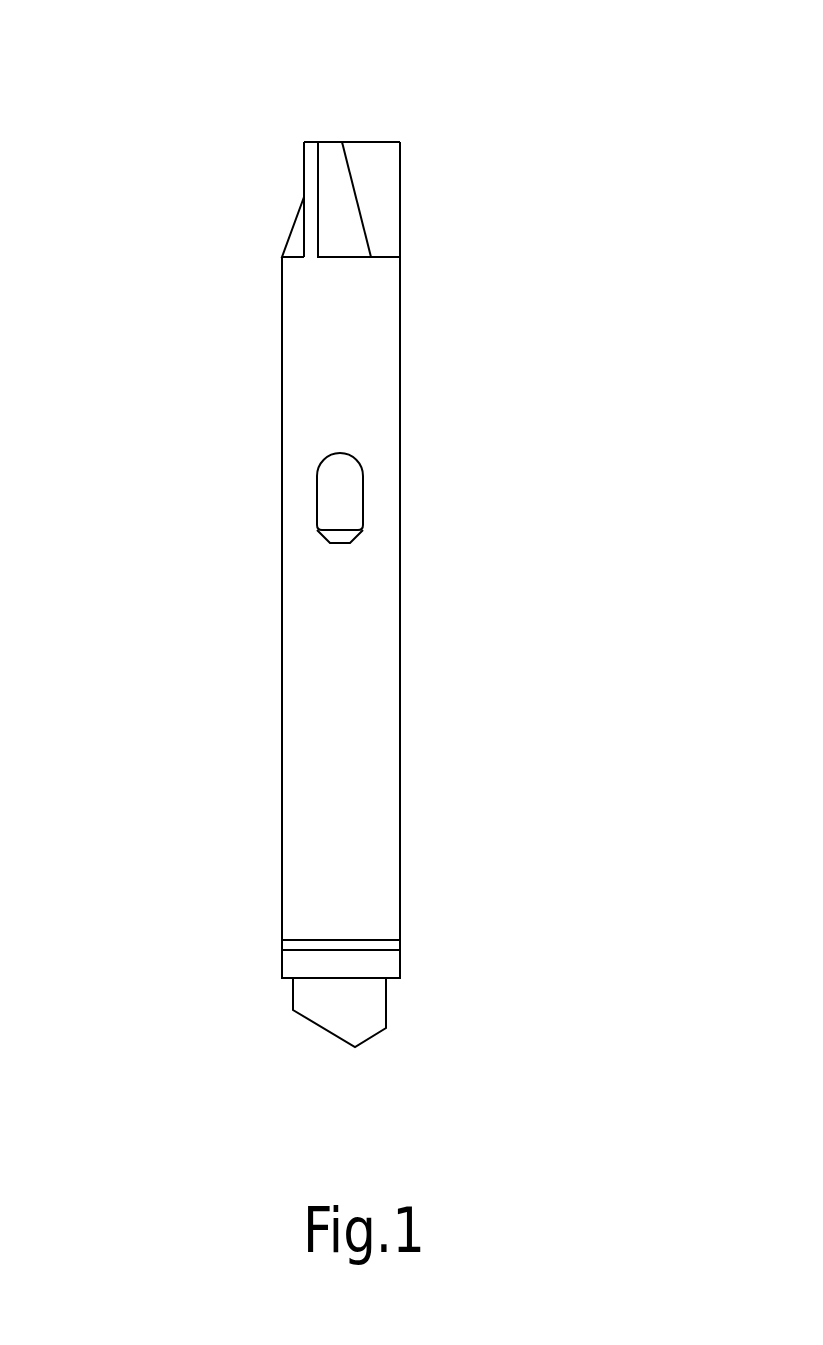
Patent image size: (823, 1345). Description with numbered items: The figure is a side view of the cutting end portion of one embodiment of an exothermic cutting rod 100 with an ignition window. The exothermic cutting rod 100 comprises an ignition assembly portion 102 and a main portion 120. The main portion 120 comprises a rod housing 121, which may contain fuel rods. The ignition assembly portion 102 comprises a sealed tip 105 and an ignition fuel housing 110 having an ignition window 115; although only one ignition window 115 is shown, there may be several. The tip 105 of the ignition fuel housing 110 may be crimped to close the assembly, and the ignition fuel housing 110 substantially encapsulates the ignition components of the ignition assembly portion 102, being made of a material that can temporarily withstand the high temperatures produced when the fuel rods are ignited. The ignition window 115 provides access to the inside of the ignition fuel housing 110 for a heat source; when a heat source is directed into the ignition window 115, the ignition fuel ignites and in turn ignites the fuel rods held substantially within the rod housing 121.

The exothermic cutting rod 100 is at (590, 248).
The ignition assembly portion 102 is at (200, 640).
The sealed tip 105 is at (303, 153).
The ignition fuel housing 110 is at (310, 358).
The ignition window 115 is at (367, 513).
The main portion 120 is at (462, 978).
The rod housing 121 is at (283, 1027).